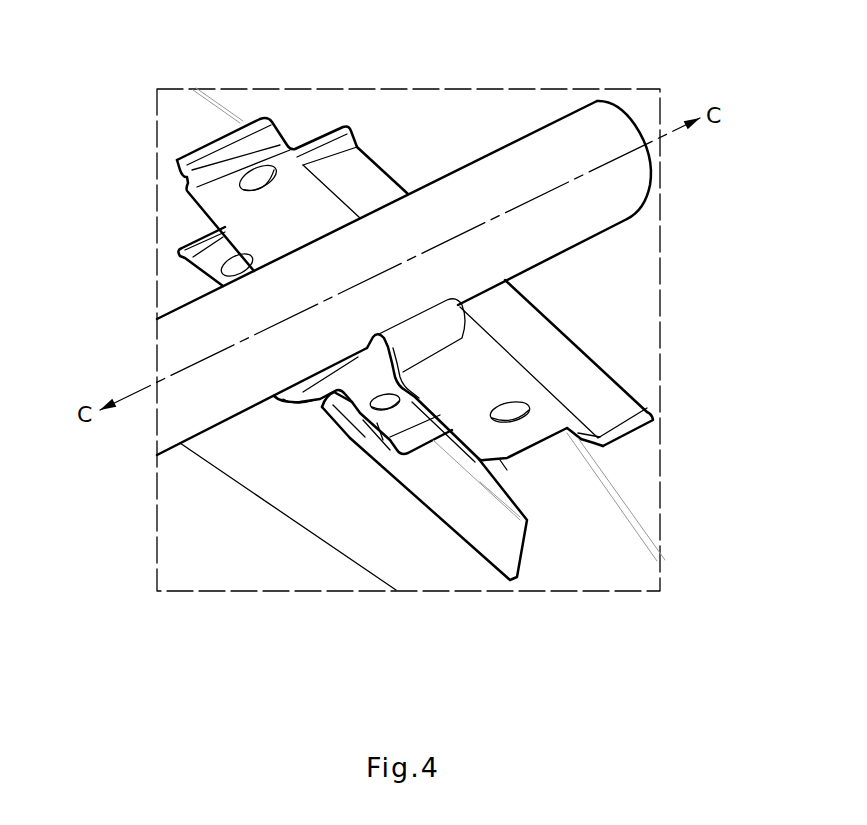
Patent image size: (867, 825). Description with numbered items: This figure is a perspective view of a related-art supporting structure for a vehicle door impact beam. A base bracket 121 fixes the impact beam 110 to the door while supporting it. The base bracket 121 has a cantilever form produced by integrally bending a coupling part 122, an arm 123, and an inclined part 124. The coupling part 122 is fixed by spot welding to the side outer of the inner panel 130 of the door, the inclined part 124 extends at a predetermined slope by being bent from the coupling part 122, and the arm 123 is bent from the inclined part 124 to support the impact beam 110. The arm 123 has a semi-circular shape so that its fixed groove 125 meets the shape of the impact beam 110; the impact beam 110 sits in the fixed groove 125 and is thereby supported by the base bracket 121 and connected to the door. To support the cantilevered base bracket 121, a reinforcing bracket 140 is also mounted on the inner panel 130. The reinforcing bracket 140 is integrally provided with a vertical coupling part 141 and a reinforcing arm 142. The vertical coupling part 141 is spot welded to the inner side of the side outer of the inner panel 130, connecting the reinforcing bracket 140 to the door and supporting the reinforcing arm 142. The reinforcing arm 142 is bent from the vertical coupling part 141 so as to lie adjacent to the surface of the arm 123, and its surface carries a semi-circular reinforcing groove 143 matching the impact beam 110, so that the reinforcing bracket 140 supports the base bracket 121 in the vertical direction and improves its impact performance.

The impact beam 110 is at (580, 132).
The base bracket 121 is at (576, 373).
The coupling part 122 is at (545, 335).
The arm 123 is at (515, 428).
The inclined part 124 is at (567, 408).
The fixed groove 125 is at (307, 393).
The inner panel 130 is at (625, 540).
The reinforcing bracket 140 is at (333, 405).
The vertical coupling part 141 is at (423, 495).
The reinforcing arm 142 is at (363, 412).
The reinforcing groove 143 is at (285, 396).